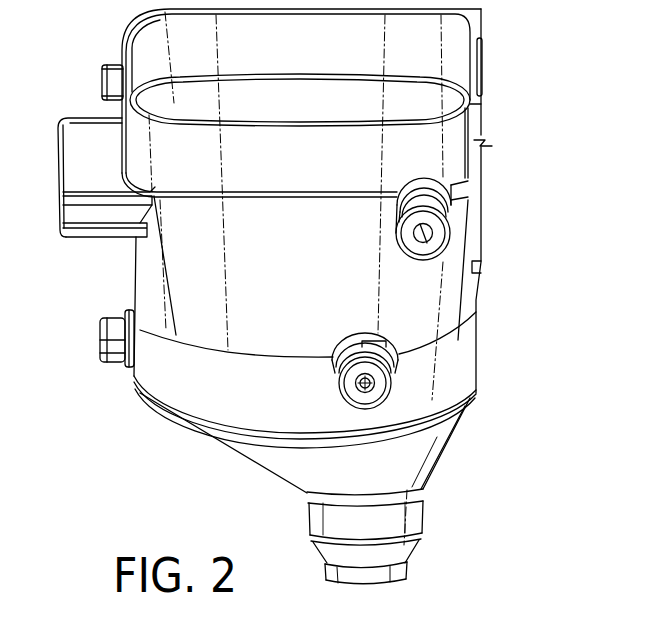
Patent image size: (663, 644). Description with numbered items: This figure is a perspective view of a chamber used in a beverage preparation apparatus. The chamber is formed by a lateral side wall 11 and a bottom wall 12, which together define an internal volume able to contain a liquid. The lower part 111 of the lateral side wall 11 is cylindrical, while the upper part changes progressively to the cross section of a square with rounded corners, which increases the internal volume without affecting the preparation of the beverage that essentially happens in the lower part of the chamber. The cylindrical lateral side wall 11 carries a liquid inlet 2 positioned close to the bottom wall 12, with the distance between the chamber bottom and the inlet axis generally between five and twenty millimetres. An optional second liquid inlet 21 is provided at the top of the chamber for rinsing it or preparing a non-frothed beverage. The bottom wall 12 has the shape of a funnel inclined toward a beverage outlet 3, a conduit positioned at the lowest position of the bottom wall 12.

The lateral side wall 11 is at (158, 256).
The lower part of the lateral side wall 111 is at (494, 303).
The bottom wall 12 is at (292, 468).
The liquid inlet 2 is at (396, 398).
The second liquid inlet 21 is at (441, 232).
The beverage outlet 3 is at (410, 520).